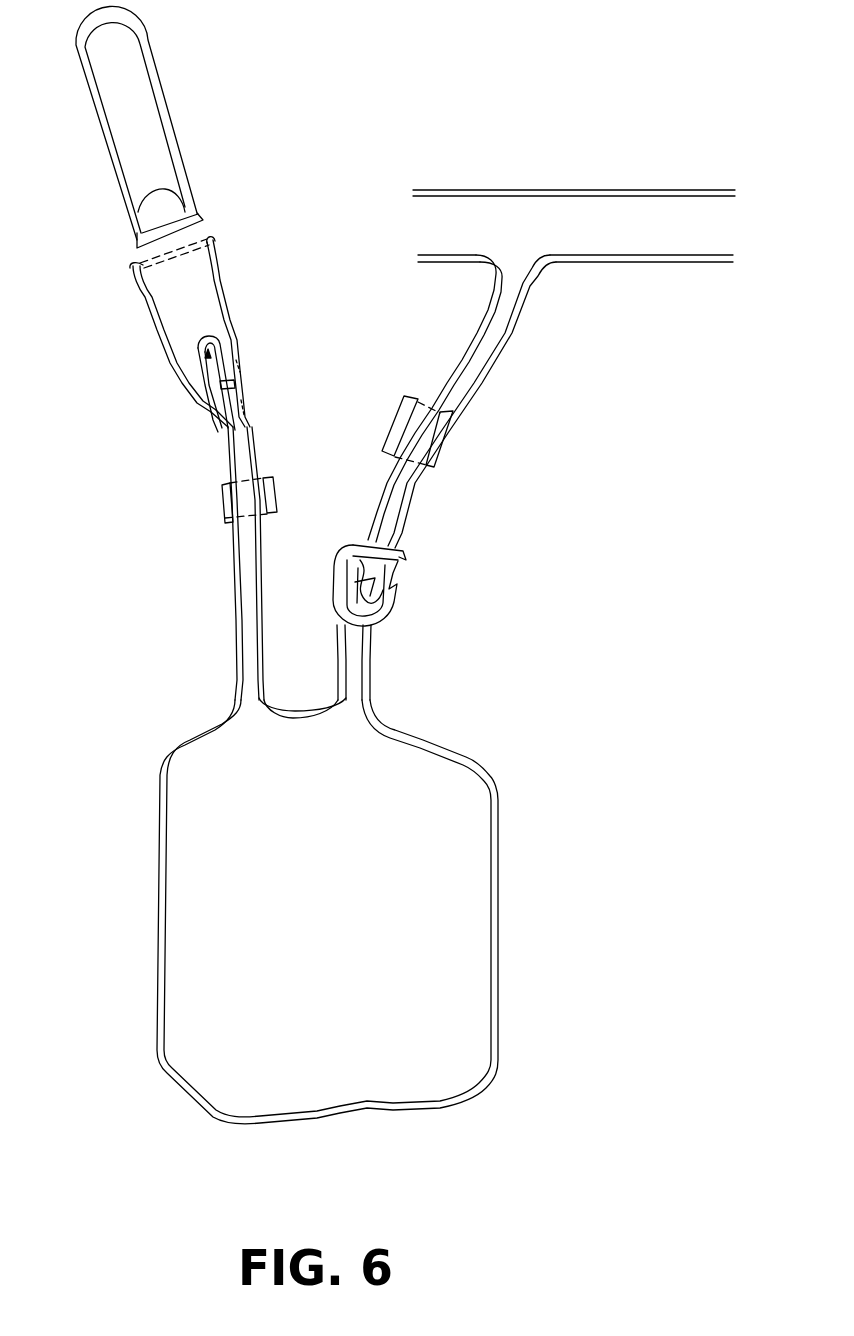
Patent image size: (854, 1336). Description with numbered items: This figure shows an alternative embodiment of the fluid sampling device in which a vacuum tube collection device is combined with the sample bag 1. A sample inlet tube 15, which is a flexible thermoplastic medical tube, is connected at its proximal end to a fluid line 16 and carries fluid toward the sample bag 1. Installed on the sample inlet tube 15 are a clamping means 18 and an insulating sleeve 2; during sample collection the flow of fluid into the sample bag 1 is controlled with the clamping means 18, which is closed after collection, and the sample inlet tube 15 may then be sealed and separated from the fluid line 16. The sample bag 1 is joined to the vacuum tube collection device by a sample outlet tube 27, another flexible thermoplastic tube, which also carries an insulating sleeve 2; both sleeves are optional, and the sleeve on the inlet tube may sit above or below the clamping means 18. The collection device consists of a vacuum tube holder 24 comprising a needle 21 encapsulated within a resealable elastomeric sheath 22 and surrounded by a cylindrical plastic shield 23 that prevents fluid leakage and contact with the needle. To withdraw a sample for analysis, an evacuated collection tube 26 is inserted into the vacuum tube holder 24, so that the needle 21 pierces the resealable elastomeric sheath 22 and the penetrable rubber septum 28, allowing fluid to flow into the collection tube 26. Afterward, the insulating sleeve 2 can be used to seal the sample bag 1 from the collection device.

The sample bag 1 is at (449, 909).
The insulating sleeve 2 is at (417, 440).
The sample inlet tube 15 is at (477, 330).
The fluid line 16 is at (650, 210).
The clamping means 18 is at (412, 597).
The needle 21 is at (247, 383).
The resealable elastomeric sheath 22 is at (203, 340).
The cylindrical plastic shield 23 is at (158, 315).
The vacuum tube holder 24 is at (185, 334).
The evacuated collection tube 26 is at (128, 98).
The sample outlet tube 27 is at (250, 613).
The penetrable rubber septum 28 is at (172, 224).